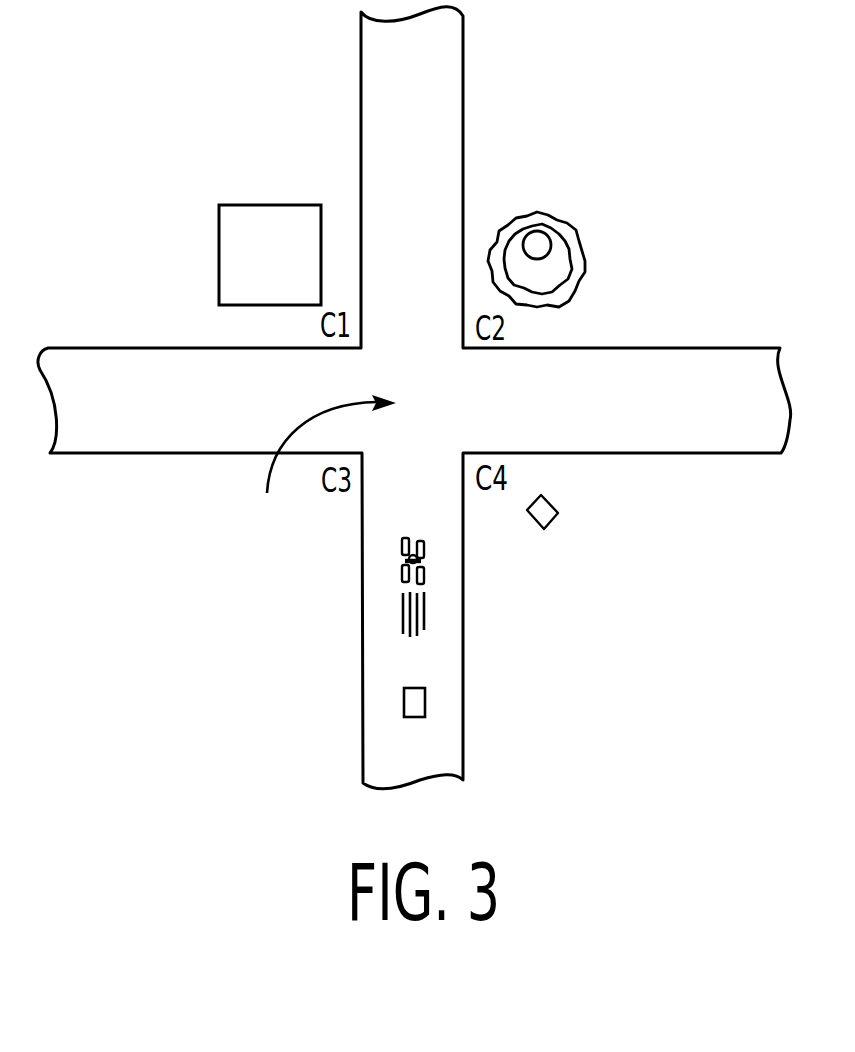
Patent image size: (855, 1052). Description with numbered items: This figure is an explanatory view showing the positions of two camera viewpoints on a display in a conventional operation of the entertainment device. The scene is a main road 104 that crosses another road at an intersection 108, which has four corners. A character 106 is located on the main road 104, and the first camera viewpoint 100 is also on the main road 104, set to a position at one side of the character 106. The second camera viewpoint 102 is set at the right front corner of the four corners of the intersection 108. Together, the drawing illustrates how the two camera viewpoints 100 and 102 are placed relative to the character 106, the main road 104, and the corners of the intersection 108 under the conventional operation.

The first camera viewpoint 100 is at (410, 702).
The second camera viewpoint 102 is at (545, 512).
The main road 104 is at (464, 603).
The character 106 is at (402, 563).
The intersection 108 is at (320, 470).